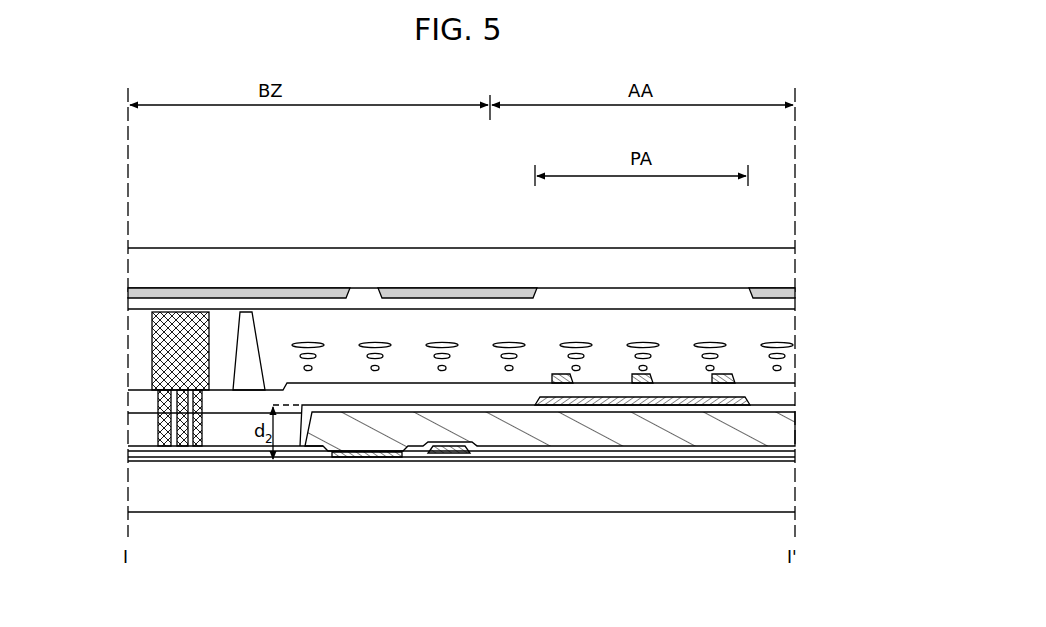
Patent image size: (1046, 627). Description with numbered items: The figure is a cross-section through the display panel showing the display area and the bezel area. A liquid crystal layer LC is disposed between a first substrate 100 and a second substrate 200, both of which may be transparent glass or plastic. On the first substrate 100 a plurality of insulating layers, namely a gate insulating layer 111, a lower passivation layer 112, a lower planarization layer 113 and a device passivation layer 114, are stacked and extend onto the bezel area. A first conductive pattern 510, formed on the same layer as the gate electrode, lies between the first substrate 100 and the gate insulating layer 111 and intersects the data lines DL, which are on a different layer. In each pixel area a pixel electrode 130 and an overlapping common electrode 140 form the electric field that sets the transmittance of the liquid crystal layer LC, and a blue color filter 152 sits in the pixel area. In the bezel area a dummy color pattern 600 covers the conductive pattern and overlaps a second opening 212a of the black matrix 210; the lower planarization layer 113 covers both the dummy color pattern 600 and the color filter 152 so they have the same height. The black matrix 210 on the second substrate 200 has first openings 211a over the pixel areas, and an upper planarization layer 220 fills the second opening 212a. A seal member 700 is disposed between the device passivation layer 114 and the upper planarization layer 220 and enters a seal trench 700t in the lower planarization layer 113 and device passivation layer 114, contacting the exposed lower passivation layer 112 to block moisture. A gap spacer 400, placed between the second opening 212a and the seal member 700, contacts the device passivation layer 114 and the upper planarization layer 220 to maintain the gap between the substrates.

The first substrate 100 is at (780, 476).
The gate insulating layer 111 is at (608, 458).
The lower passivation layer 112 is at (795, 449).
The lower planarization layer 113 is at (795, 406).
The device passivation layer 114 is at (128, 401).
The pixel electrode 130 is at (558, 383).
The common electrode 140 is at (725, 406).
The blue color filter 152 is at (682, 428).
The second substrate 200 is at (128, 262).
The black matrix 210 is at (795, 293).
The first opening 211a is at (630, 297).
The second opening 212a is at (364, 297).
The upper planarization layer 220 is at (128, 305).
The gap spacer 400 is at (246, 335).
The first conductive pattern 510 is at (356, 458).
The dummy color pattern 600 is at (480, 425).
The seal member 700 is at (185, 345).
The seal trench 700t is at (163, 425).
The data line DL is at (445, 454).
The liquid crystal layer LC is at (806, 309).